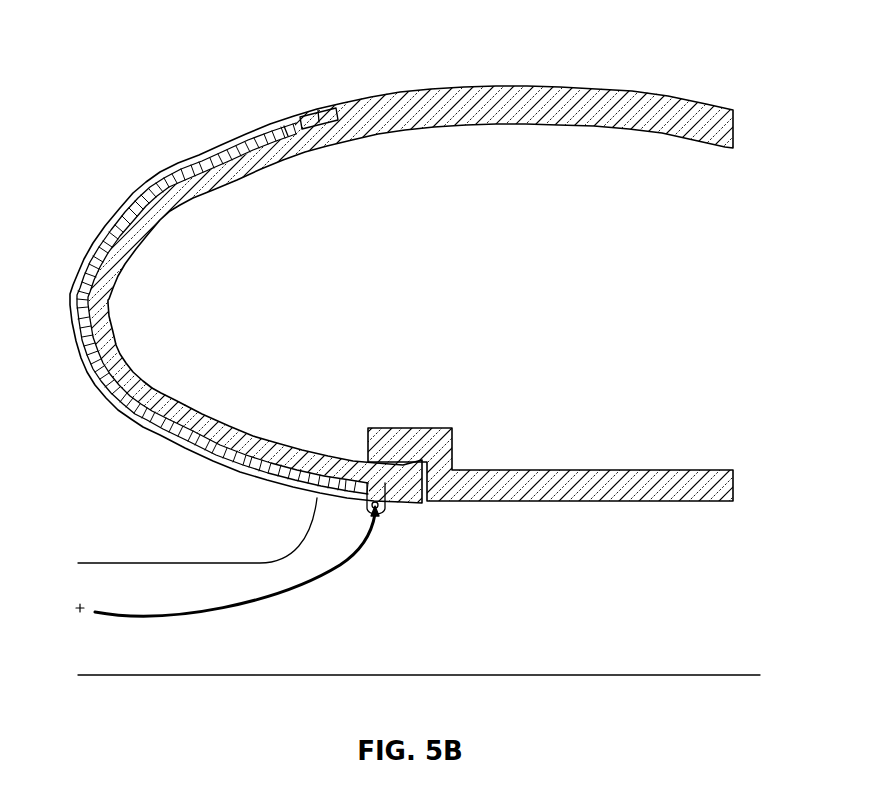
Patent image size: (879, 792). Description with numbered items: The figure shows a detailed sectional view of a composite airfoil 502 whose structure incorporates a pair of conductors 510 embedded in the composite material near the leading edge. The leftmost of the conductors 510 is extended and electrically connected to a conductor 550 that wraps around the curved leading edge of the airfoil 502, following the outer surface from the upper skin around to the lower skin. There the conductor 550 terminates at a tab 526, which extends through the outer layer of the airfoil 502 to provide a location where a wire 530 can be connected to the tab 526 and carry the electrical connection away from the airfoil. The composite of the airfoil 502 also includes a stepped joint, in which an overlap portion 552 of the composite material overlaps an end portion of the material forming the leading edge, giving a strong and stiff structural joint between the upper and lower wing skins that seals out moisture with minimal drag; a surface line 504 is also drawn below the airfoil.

The airfoil 502 is at (596, 90).
The conductors 510 is at (317, 118).
The conductor 550 is at (120, 237).
The overlap portion 552 is at (405, 427).
The tab 526 is at (380, 516).
The wire 530 is at (310, 590).
The surface line 504 is at (178, 657).